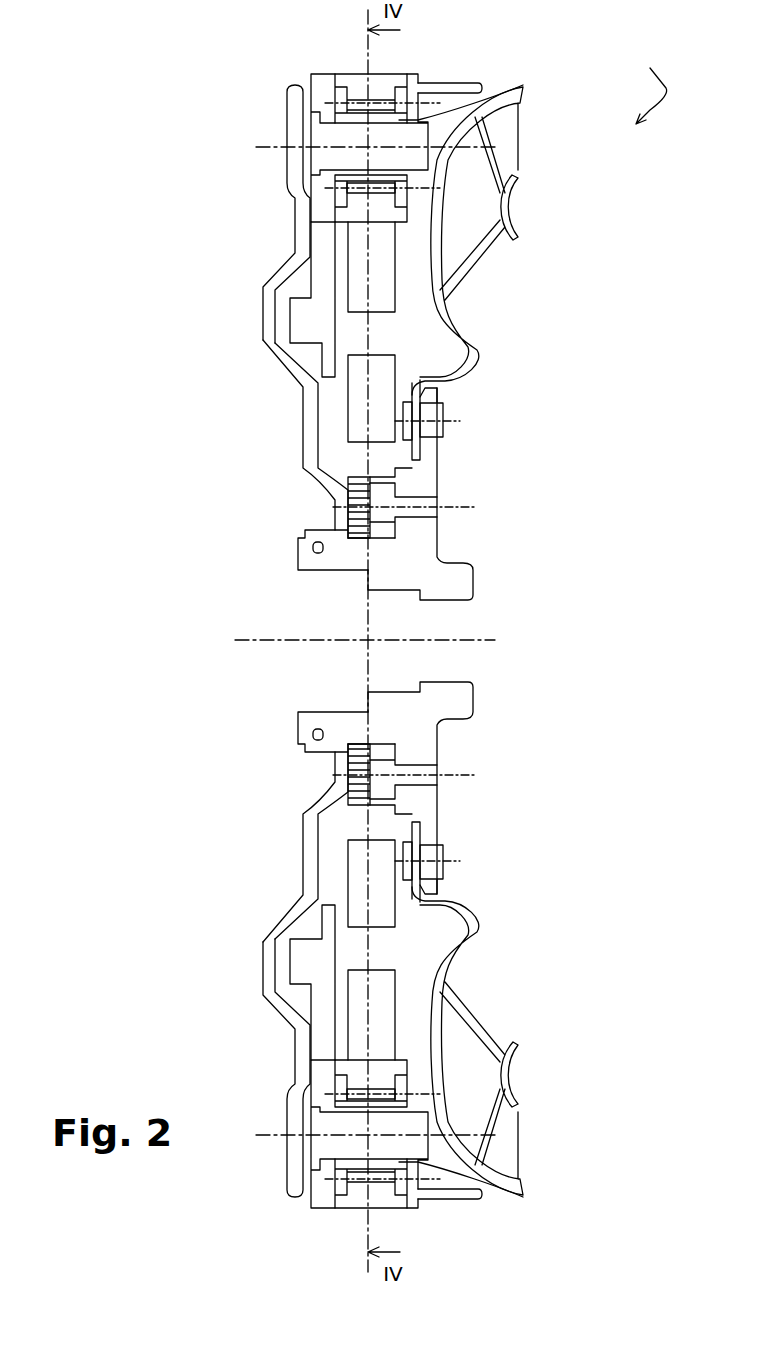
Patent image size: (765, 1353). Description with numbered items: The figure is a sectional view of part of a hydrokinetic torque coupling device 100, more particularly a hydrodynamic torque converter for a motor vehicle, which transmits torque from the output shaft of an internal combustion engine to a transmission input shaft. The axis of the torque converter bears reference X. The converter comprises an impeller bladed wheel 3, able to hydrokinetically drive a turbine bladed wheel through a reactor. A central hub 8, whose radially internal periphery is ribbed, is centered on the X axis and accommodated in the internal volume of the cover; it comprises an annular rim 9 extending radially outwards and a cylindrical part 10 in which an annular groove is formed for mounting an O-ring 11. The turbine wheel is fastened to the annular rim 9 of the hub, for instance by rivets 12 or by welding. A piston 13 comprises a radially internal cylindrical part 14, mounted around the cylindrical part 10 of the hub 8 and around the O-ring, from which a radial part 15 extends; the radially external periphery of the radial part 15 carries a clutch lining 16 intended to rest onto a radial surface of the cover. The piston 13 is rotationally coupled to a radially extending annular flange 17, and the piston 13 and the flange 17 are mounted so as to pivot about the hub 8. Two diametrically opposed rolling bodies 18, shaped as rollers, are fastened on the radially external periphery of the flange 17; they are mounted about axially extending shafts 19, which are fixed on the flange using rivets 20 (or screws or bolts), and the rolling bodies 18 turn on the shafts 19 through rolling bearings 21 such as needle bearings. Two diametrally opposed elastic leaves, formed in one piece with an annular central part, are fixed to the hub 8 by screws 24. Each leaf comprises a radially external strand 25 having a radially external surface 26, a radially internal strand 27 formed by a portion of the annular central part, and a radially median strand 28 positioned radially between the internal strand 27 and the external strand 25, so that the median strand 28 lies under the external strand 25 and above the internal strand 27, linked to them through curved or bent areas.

The hydrokinetic torque coupling device 100 is at (656, 83).
The impeller bladed wheel 3 is at (455, 193).
The central hub 8 is at (455, 580).
The annular rim 9 is at (425, 447).
The cylindrical part 10 is at (335, 720).
The O-ring 11 is at (320, 742).
The rivets 12 is at (433, 427).
The piston 13 is at (313, 403).
The radially internal cylindrical part 14 is at (313, 528).
The radial part 15 is at (265, 327).
The clutch lining 16 is at (288, 147).
The annular flange 17 is at (313, 230).
The rolling bodies 18 is at (352, 75).
The shafts 19 is at (525, 85).
The rivets 20 is at (333, 130).
The rolling bearings 21 is at (385, 107).
The screws 24 is at (432, 515).
The radially external strand 25 is at (357, 283).
The radially external surface 26 is at (380, 222).
The radially internal strand 27 is at (348, 478).
The radially median strand 28 is at (388, 370).
The axis X is at (272, 640).